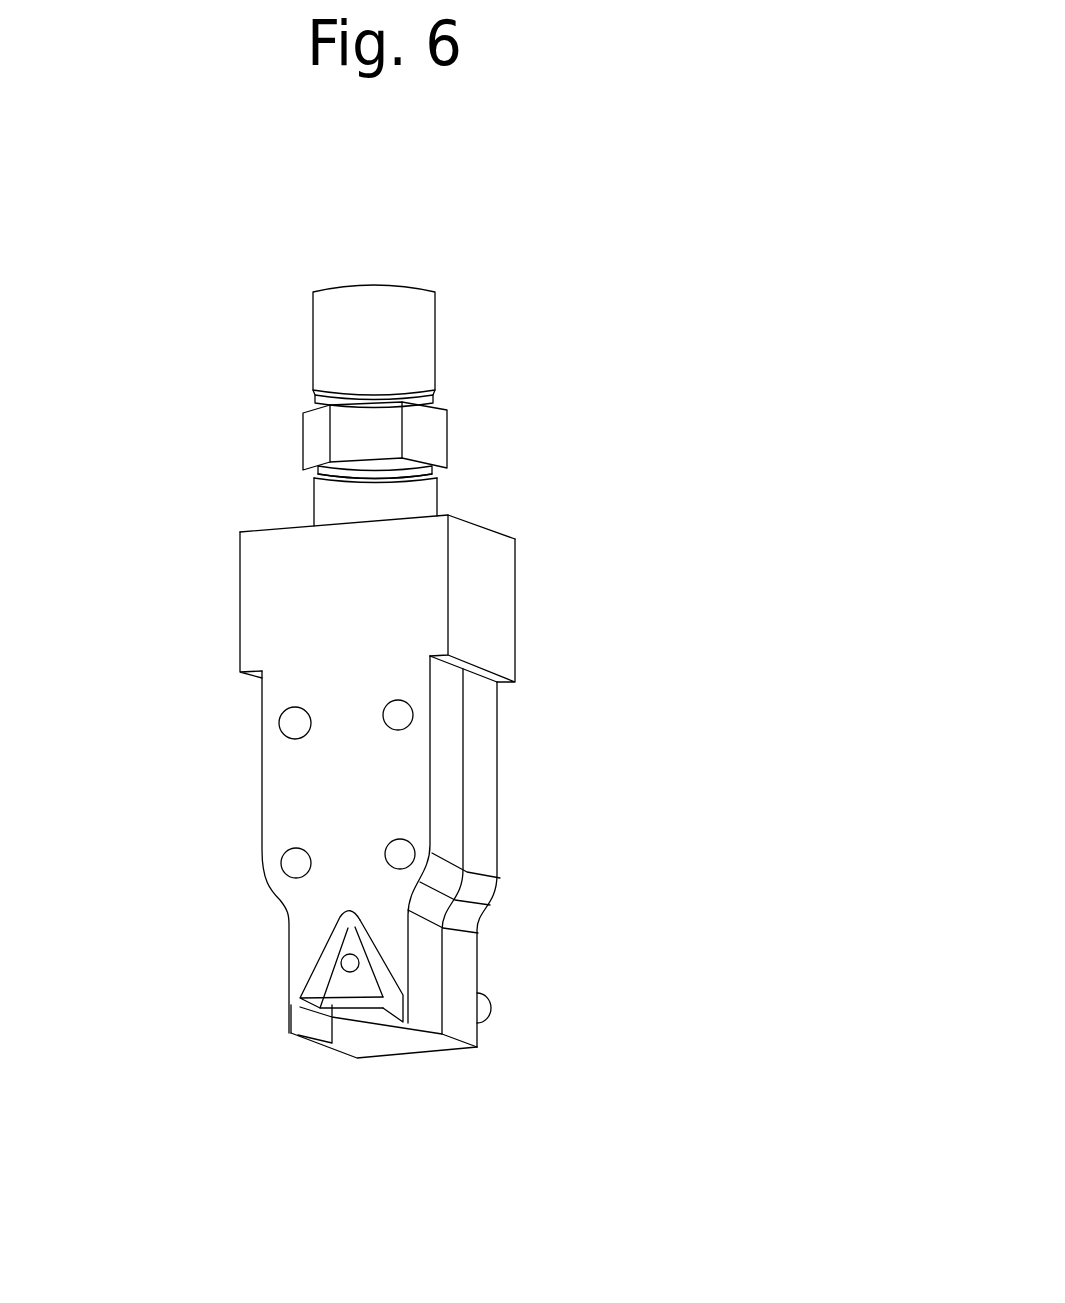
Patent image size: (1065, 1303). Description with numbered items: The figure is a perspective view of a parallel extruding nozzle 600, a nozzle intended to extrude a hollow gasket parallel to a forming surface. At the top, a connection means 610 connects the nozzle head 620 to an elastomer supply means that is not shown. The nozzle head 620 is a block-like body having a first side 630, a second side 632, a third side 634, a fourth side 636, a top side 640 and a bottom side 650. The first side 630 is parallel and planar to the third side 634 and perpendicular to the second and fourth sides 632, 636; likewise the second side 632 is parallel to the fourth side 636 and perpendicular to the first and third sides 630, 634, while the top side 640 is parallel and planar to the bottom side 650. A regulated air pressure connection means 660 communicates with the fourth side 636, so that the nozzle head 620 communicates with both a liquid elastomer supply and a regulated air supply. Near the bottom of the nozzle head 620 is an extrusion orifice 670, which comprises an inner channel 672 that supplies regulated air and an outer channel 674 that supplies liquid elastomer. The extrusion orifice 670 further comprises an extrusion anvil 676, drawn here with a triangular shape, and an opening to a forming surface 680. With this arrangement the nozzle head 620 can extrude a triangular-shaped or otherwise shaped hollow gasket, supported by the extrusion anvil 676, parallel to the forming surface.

The parallel extruding nozzle 600 is at (525, 298).
The connection means 610 is at (428, 430).
The nozzle head 620 is at (517, 535).
The first side 630 is at (480, 577).
The second side 632 is at (383, 625).
The third side 634 is at (240, 617).
The fourth side 636 is at (505, 808).
The top side 640 is at (478, 525).
The bottom side 650 is at (433, 1045).
The regulated air pressure connection means 660 is at (487, 1010).
The extrusion orifice 670 is at (343, 914).
The inner channel 672 is at (341, 960).
The outer channel 674 is at (380, 970).
The extrusion anvil 676 is at (360, 997).
The opening to a forming surface 680 is at (377, 1043).